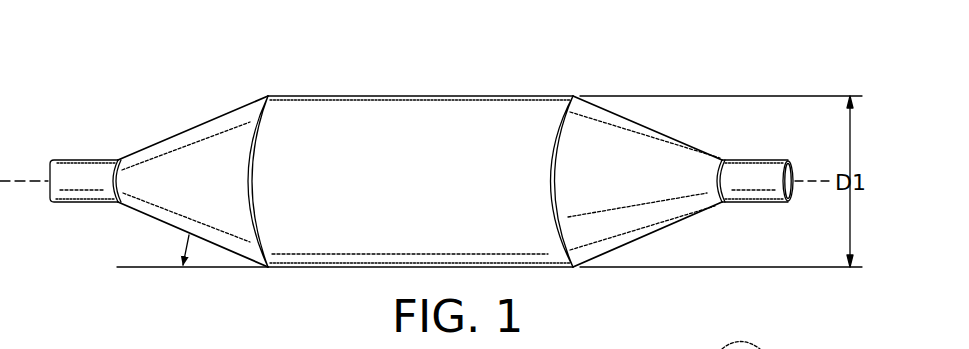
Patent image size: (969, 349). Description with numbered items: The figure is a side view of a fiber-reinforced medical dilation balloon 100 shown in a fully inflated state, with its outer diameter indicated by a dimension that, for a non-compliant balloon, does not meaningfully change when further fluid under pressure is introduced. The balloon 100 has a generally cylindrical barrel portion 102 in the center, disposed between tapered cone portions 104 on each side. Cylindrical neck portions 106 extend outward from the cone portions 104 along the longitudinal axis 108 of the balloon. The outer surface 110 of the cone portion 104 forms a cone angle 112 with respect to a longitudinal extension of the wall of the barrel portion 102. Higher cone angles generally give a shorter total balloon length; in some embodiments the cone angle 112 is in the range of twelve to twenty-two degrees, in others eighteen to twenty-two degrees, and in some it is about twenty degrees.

The medical balloon 100 is at (211, 292).
The barrel portion 102 is at (572, 52).
The cone portion 104 is at (122, 52).
The neck portion 106 is at (54, 52).
The longitudinal axis 108 is at (36, 181).
The outer surface 110 is at (190, 131).
The cone angle 112 is at (180, 252).